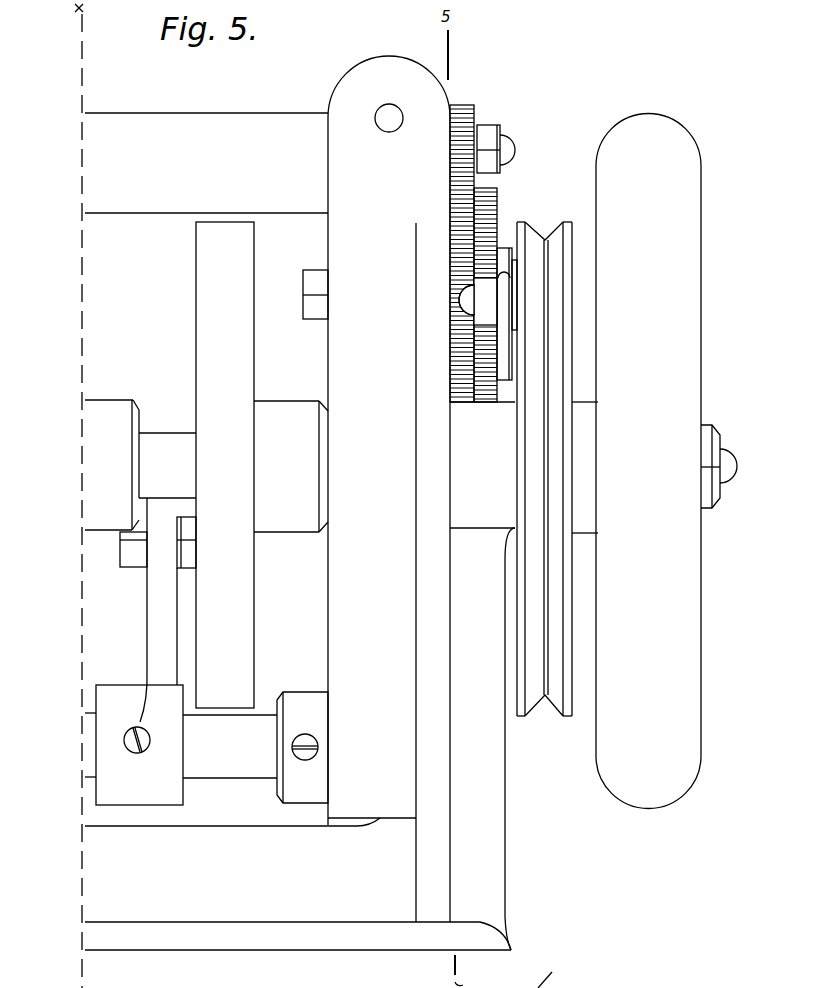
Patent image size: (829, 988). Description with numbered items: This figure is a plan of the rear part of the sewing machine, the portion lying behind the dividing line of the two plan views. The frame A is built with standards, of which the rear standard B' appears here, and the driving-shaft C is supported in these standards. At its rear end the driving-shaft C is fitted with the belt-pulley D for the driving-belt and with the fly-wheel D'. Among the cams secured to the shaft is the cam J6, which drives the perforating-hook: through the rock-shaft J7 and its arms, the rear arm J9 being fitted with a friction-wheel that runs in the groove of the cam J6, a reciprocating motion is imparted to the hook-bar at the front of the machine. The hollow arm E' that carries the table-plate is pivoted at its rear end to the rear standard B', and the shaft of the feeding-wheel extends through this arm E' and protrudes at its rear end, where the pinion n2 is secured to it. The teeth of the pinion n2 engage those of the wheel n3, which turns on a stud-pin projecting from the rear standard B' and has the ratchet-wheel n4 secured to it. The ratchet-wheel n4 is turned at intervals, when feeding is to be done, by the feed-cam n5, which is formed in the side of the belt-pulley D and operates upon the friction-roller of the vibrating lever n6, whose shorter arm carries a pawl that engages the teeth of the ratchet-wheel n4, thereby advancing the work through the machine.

The arm E' is at (206, 163).
The rear standard B' is at (376, 489).
The frame A is at (341, 676).
The driving-shaft C is at (206, 484).
The cam J6 is at (225, 465).
The rock-shaft J7 is at (212, 745).
The rear arm J9 is at (158, 610).
The belt-pulley D is at (543, 469).
The fly-wheel D' is at (666, 461).
The pinion n2 is at (482, 243).
The wheel n3 is at (478, 301).
The ratchet-wheel n4 is at (494, 295).
The feed-cam n5 is at (462, 307).
The vibrating lever n6 is at (507, 314).